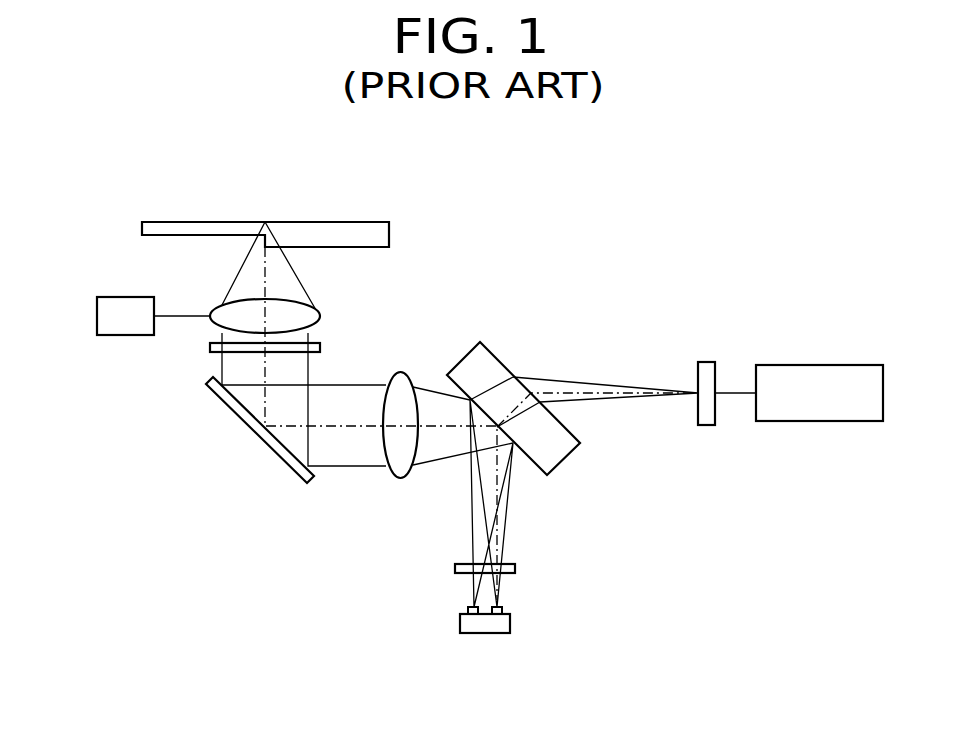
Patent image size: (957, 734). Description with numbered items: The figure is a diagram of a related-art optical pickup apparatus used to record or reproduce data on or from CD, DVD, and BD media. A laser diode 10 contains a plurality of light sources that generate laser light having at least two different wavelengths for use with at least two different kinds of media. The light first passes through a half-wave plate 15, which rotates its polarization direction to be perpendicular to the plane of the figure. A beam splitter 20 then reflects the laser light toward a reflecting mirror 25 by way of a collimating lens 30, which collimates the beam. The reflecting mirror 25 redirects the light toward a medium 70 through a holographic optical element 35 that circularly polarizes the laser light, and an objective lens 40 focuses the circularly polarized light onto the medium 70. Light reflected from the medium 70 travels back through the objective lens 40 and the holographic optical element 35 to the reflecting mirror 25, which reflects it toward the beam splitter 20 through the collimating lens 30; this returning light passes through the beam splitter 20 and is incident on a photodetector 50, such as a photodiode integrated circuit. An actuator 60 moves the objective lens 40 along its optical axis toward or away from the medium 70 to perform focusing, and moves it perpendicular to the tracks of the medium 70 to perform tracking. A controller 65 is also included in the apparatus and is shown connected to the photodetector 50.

The laser diode 10 is at (507, 623).
The half-wave plate 15 is at (515, 567).
The beam splitter 20 is at (488, 357).
The reflecting mirror 25 is at (220, 400).
The collimating lens 30 is at (395, 478).
The holographic optical element 35 is at (210, 347).
The objective lens 40 is at (322, 310).
The photodetector 50 is at (707, 365).
The actuator 60 is at (97, 313).
The controller 65 is at (860, 365).
The medium 70 is at (332, 224).